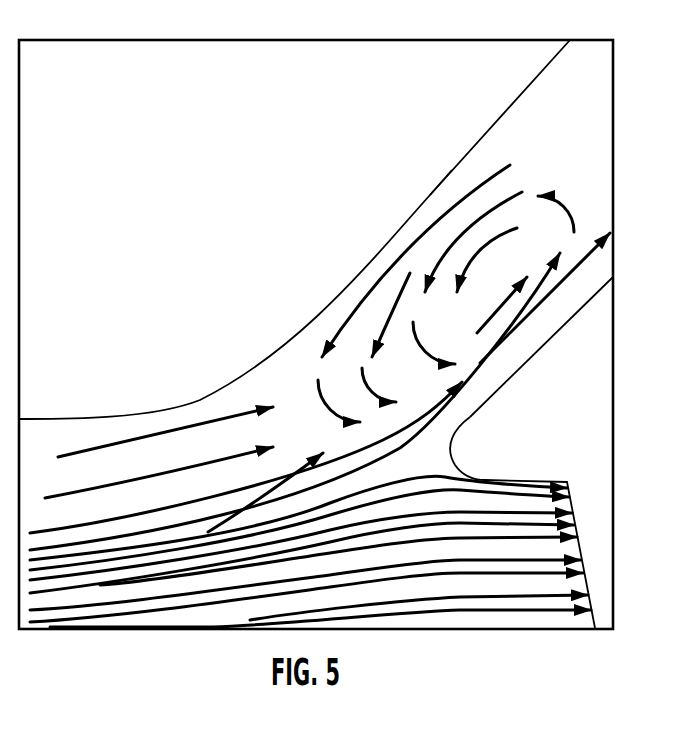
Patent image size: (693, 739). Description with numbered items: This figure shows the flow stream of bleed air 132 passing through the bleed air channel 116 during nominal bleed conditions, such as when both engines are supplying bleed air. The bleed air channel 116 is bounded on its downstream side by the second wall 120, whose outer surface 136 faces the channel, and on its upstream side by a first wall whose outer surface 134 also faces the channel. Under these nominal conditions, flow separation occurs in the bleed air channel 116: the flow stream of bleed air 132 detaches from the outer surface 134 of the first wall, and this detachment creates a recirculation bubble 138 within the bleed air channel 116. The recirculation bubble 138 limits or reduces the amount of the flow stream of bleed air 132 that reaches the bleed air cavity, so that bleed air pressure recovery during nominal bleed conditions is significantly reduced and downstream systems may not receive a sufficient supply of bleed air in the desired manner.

The bleed air channel 116 is at (252, 342).
The second wall 120 is at (597, 306).
The flow stream of bleed air 132 is at (143, 478).
The outer surface of the first wall 134 is at (438, 186).
The outer surface of the second wall 136 is at (485, 401).
The recirculation bubble 138 is at (521, 272).